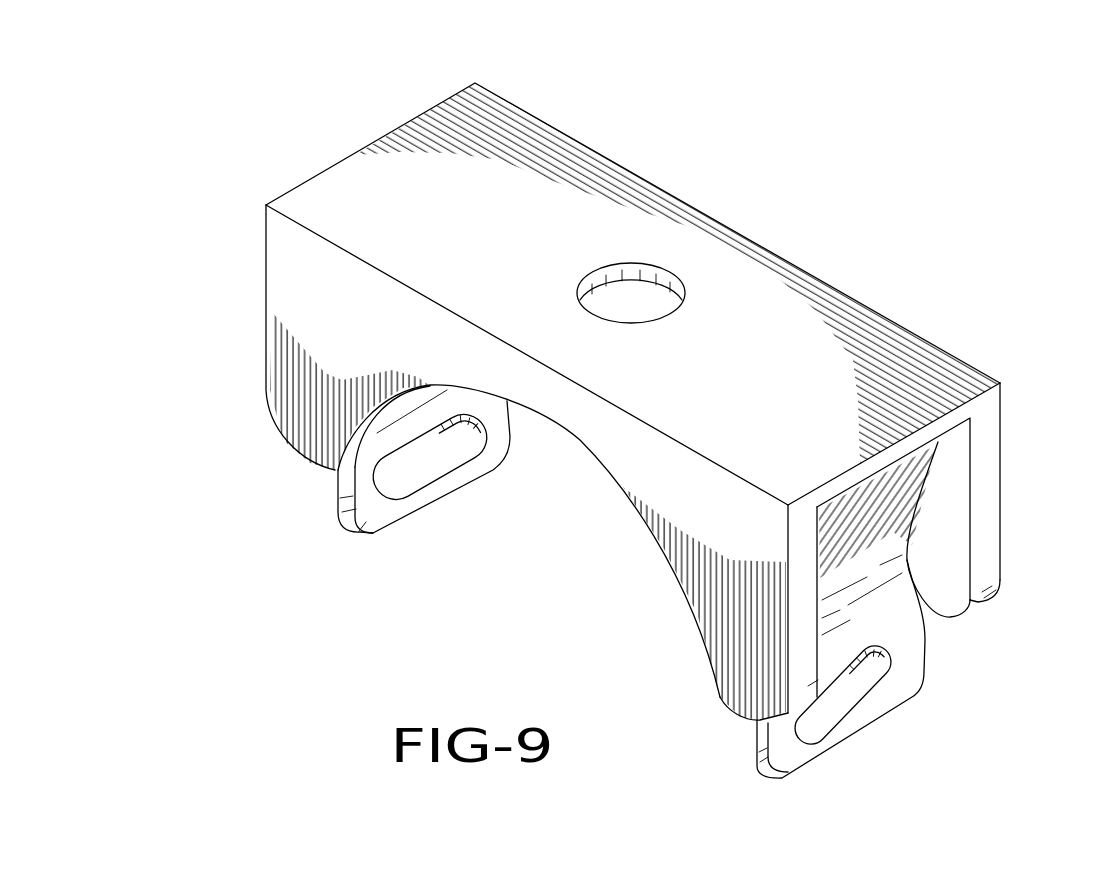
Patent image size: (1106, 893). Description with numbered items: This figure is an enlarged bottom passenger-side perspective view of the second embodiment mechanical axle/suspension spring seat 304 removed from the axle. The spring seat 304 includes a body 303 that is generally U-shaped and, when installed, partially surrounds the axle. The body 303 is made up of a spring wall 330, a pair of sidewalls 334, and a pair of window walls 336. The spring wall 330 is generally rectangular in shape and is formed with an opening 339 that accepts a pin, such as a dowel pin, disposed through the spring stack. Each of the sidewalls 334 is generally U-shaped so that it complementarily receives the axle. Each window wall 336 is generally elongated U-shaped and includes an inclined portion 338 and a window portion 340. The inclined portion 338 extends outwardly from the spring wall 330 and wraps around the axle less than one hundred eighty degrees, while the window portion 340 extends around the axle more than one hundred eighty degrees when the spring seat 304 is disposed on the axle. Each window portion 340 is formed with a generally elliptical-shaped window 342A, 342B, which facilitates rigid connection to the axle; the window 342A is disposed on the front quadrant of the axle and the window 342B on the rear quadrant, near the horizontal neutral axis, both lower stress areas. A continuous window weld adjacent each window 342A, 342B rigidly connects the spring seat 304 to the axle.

The mechanical axle/suspension spring seat 304 is at (898, 171).
The body 303 is at (892, 312).
The spring wall 330 is at (515, 173).
The opening 339 is at (659, 291).
The sidewalls 334 is at (742, 666).
The inclined portion 338 is at (893, 511).
The window walls 336 is at (338, 516).
The window portion 340 is at (369, 527).
The window 342A is at (416, 480).
The window 342B is at (817, 727).